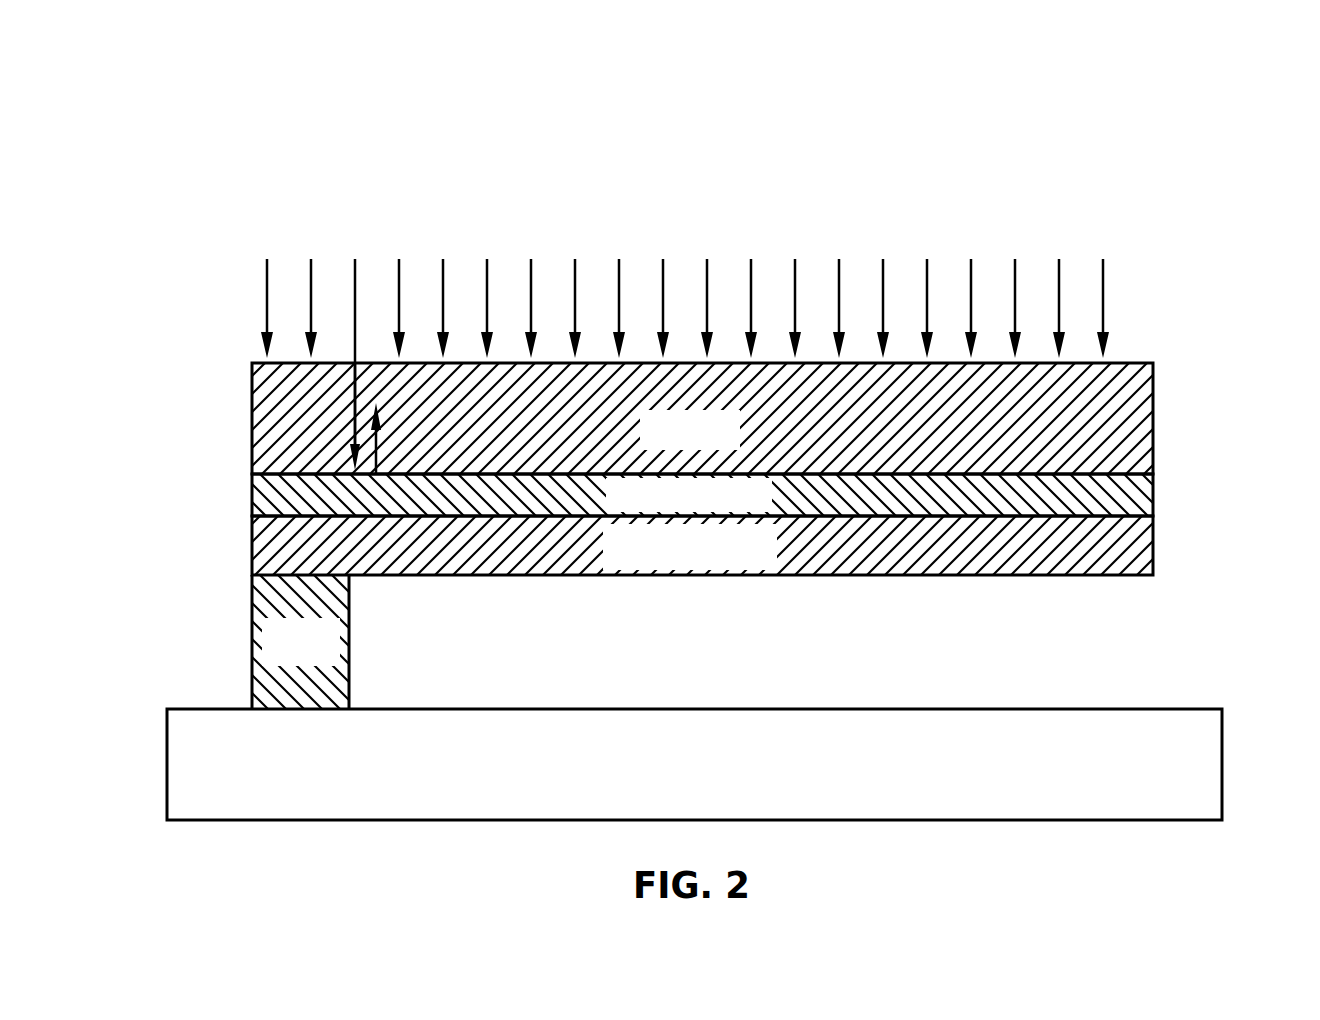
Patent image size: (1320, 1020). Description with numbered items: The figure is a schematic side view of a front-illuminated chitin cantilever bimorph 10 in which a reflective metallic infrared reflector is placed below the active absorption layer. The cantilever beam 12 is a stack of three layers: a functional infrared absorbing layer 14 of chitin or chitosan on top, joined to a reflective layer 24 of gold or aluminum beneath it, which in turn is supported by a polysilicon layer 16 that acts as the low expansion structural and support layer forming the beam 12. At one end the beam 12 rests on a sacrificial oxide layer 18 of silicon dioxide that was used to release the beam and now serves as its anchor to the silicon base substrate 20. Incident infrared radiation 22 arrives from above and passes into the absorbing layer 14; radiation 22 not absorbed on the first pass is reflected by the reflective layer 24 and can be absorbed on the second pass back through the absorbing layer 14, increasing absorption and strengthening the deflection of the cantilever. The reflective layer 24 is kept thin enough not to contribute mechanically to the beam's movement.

The chitin cantilever bimorph 10 is at (172, 118).
The cantilever beam 12 is at (247, 474).
The infrared absorbing layer 14 is at (1153, 422).
The polysilicon layer 16 is at (1153, 535).
The sacrificial oxide layer 18 is at (256, 652).
The silicon base substrate 20 is at (1222, 785).
The infrared radiation 22 is at (1103, 300).
The reflective layer 24 is at (1153, 497).